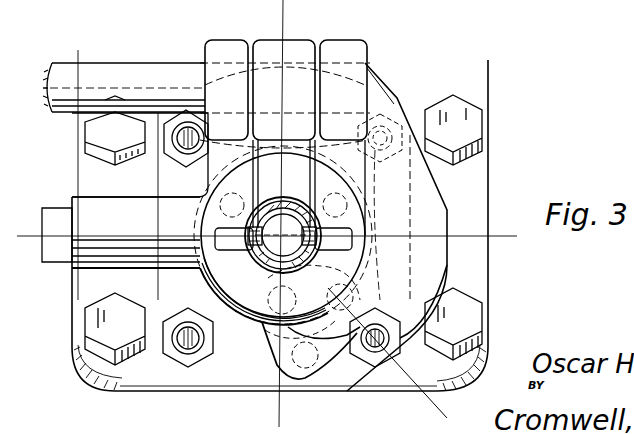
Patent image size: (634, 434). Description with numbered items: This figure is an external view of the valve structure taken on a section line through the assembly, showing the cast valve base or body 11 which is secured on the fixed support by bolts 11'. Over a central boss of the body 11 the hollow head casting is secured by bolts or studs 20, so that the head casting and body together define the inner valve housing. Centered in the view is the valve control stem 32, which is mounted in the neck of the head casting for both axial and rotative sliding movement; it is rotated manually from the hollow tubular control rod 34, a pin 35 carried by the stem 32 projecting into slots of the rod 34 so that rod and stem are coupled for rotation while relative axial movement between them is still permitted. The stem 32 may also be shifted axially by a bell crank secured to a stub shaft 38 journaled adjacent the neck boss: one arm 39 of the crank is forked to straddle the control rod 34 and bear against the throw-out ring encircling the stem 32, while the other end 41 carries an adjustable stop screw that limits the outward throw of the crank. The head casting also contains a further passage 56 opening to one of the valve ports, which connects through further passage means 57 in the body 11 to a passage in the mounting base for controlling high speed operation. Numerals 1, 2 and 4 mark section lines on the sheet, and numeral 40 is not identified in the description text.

The section line 1- 1 is at (315, 13).
The section line 2- 2 is at (17, 222).
The section line 4- 4 is at (436, 431).
The valve base or body 11 is at (297, 225).
The bolts 11' is at (283, 230).
The bolts or studs 20 is at (183, 345).
The valve control stem 32 is at (292, 212).
The tubular control rod 34 is at (278, 217).
The pin 35 is at (266, 249).
The stub shaft 38 is at (73, 65).
The forked arm of bell crank 39 is at (303, 110).
The hidden boss 40 is at (352, 278).
The other end of bell crank 41 is at (195, 172).
The further passage 56 is at (346, 312).
The further passage means 57 is at (306, 366).